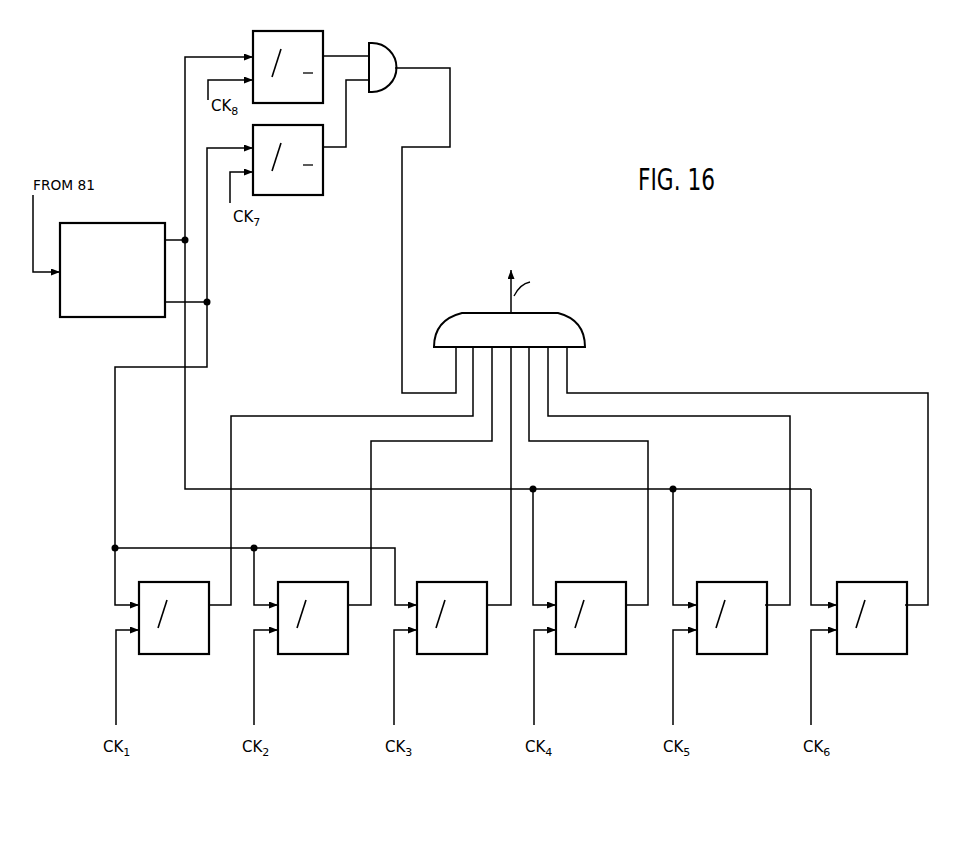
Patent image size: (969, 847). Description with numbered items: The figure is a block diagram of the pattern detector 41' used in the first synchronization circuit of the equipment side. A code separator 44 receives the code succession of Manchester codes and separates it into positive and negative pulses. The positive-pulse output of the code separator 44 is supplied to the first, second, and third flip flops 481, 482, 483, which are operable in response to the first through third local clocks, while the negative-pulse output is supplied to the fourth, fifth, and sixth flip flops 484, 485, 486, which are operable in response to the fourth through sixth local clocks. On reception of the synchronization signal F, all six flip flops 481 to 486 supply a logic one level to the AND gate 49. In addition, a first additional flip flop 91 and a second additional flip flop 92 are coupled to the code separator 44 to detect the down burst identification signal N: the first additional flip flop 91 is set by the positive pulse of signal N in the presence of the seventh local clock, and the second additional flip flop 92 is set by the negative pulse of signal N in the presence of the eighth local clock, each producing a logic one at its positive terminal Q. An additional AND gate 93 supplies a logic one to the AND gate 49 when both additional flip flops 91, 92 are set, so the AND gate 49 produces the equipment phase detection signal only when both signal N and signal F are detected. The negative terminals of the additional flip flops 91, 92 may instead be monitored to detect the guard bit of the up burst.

The code separator 44 is at (106, 224).
The second additional flip flop 92 is at (297, 31).
The first additional flip flop 91 is at (325, 193).
The additional AND gate 93 is at (386, 44).
The AND gate 49 is at (578, 327).
The first flip flop 481 is at (190, 657).
The second flip flop 482 is at (330, 657).
The third flip flop 483 is at (440, 657).
The fourth flip flop 484 is at (580, 657).
The fifth flip flop 485 is at (715, 657).
The sixth flip flop 486 is at (853, 657).
The pattern detector 41' is at (207, 765).